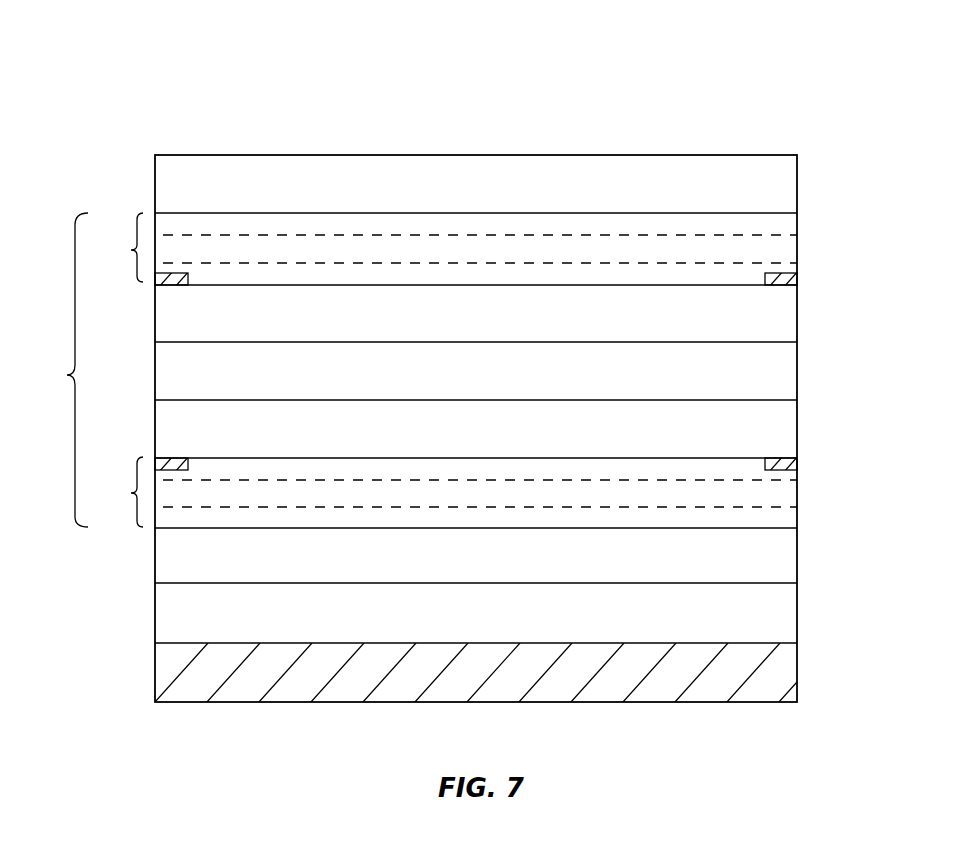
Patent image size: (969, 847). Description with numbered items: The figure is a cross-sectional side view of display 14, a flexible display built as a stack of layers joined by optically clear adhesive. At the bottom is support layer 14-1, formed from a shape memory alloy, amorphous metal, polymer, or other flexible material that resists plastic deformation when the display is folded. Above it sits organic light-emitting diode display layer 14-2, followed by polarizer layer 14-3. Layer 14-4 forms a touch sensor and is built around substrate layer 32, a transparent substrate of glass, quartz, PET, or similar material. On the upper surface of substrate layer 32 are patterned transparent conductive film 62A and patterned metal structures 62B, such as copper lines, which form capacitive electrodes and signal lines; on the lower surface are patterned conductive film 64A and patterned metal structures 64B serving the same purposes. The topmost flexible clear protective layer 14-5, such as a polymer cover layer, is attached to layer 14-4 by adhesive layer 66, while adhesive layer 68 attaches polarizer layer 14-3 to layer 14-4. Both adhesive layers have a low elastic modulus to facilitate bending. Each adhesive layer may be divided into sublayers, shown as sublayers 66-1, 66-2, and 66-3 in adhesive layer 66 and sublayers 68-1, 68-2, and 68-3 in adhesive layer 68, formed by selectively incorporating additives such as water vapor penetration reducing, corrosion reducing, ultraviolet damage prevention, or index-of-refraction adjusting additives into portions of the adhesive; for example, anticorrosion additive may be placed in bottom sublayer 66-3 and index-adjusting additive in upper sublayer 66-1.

The display 14 is at (674, 84).
The support layer 14-1 is at (785, 668).
The organic light-emitting diode display layer 14-2 is at (785, 618).
The polarizer layer 14-3 is at (785, 563).
The touch sensor layer 14-4 is at (54, 370).
The flexible clear protective layer 14-5 is at (787, 180).
The substrate layer 32 is at (787, 365).
The patterned transparent conductive film 62A is at (787, 323).
The patterned metal structures 62B is at (795, 277).
The patterned conductive film 64A is at (787, 423).
The patterned metal structures 64B is at (796, 463).
The adhesive layer 66 is at (124, 247).
The sublayer 66-1 is at (787, 221).
The sublayer 66-2 is at (787, 247).
The sublayer 66-3 is at (787, 268).
The adhesive layer 68 is at (124, 492).
The sublayer 68-1 is at (787, 492).
The sublayer 68-2 is at (787, 516).
The sublayer 68-3 is at (797, 526).